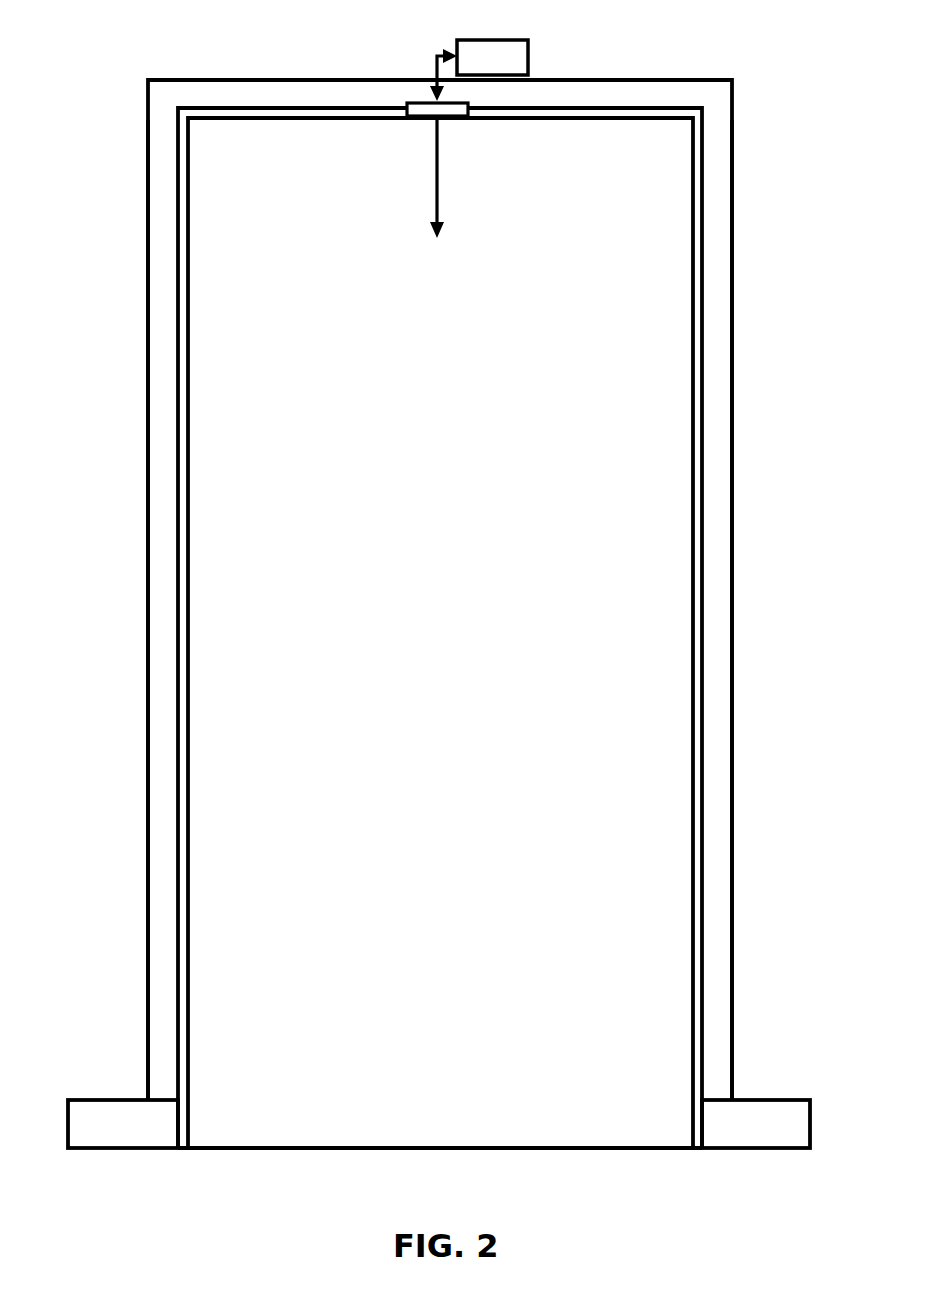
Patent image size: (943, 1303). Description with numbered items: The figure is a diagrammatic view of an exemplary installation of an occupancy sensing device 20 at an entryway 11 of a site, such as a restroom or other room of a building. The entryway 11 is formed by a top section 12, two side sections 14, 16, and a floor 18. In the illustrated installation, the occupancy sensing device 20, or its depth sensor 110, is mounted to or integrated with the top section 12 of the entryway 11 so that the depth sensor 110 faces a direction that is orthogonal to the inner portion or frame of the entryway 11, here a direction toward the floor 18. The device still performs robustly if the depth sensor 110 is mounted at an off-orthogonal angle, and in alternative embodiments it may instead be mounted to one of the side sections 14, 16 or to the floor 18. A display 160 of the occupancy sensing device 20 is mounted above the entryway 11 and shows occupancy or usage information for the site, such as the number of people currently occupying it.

The entryway 11 is at (126, 97).
The top section 12 is at (286, 95).
The side section 14 is at (720, 808).
The side section 16 is at (162, 757).
The floor 18 is at (479, 1147).
The occupancy sensing device 20 is at (416, 64).
The depth sensor 110 is at (415, 122).
The display 160 is at (503, 38).